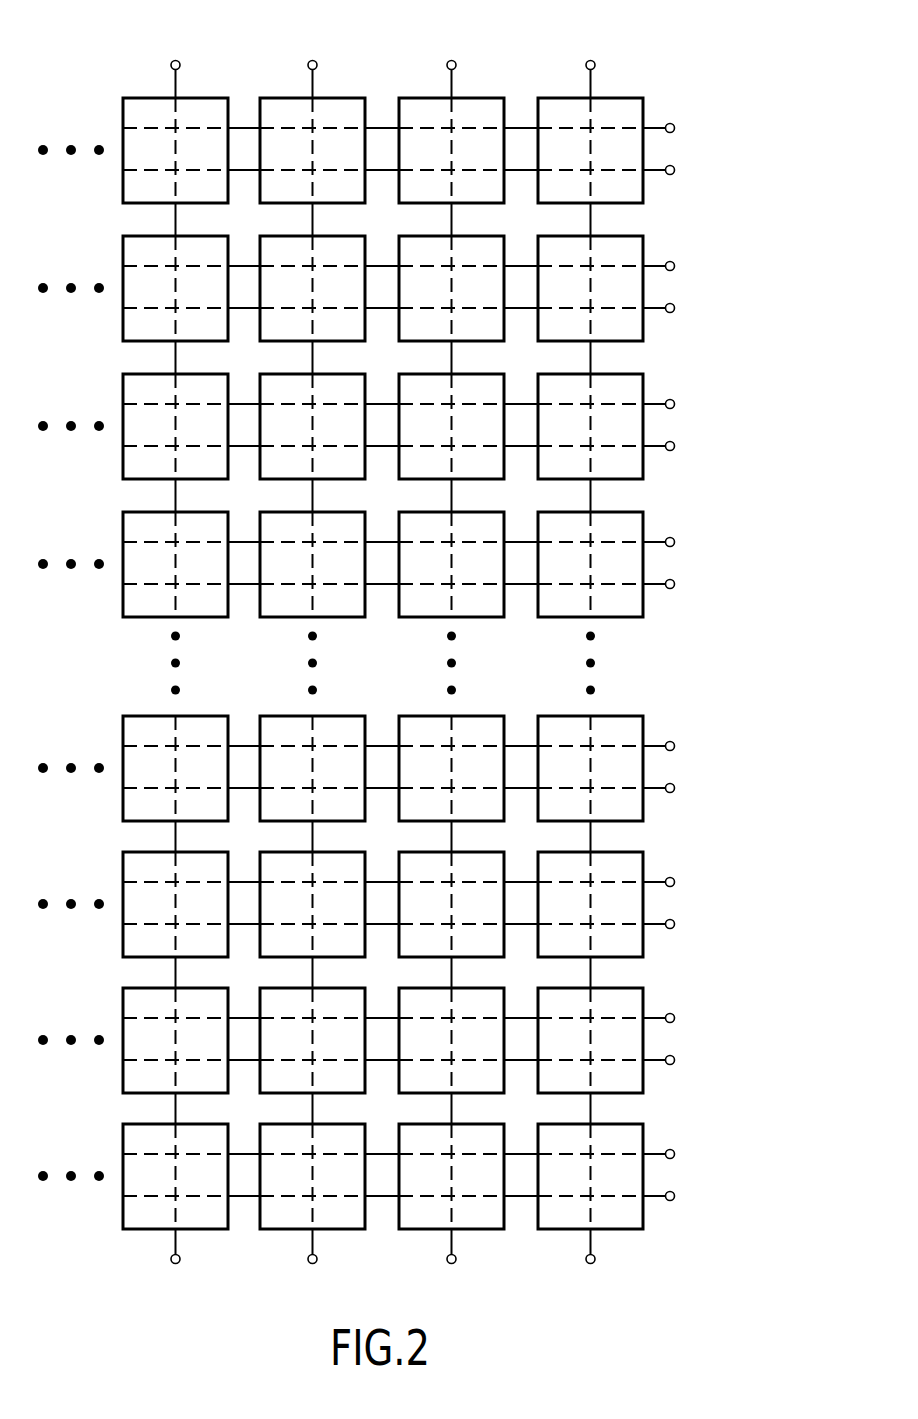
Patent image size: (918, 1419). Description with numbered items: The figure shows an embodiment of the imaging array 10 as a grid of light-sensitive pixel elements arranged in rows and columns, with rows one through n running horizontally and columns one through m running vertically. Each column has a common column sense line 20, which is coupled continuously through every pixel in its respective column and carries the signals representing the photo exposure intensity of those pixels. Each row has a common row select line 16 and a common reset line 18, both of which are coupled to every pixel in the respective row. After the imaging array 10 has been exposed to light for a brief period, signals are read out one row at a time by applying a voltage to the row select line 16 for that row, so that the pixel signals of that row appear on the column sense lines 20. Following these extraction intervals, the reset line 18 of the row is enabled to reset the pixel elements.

The imaging array 10 is at (655, 68).
The row select line 16 is at (439, 685).
The reset line 18 is at (439, 643).
The column sense line 20 is at (376, 665).